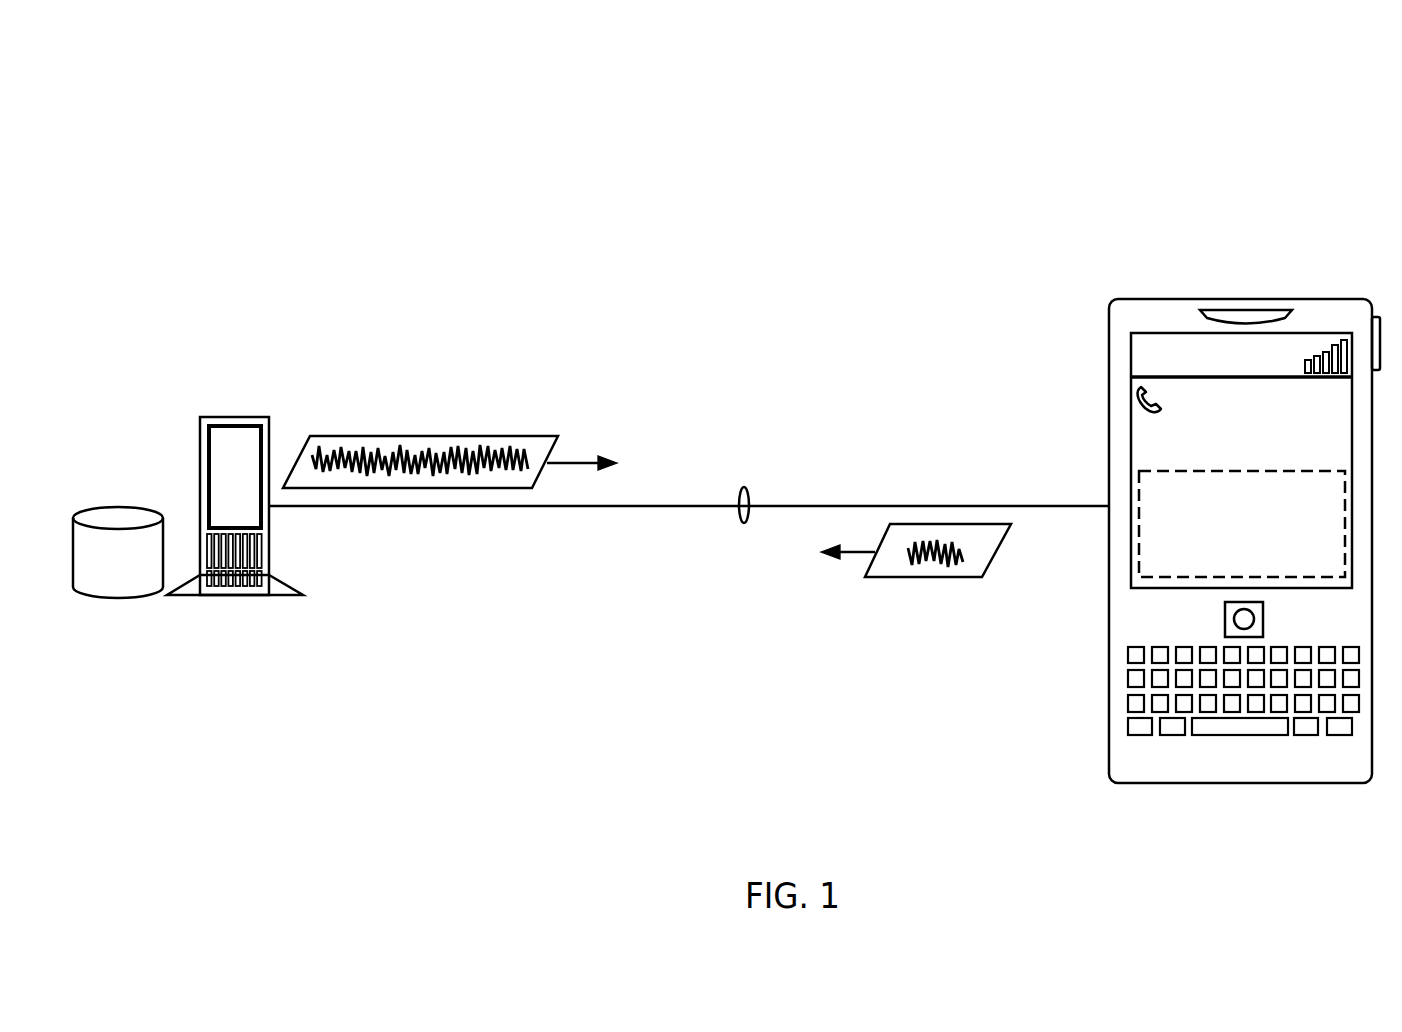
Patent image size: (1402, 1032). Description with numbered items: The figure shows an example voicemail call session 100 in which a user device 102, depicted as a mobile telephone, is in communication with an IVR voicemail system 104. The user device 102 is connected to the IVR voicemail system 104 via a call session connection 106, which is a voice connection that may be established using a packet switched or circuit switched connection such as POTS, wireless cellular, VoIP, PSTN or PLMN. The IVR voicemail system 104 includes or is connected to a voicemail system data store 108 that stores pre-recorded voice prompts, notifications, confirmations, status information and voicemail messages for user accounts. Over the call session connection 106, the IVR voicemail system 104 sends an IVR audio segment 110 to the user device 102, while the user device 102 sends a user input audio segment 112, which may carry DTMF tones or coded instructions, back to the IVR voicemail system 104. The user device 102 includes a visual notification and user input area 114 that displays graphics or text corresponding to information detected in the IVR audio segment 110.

The voicemail call session 100 is at (1233, 64).
The user device 102 is at (1176, 299).
The IVR voicemail system 104 is at (190, 393).
The call session connection 106 is at (689, 417).
The voicemail system data store 108 is at (206, 633).
The IVR audio segment 110 is at (450, 436).
The user input audio segment 112 is at (936, 578).
The visual notification and user input area 114 is at (1093, 640).